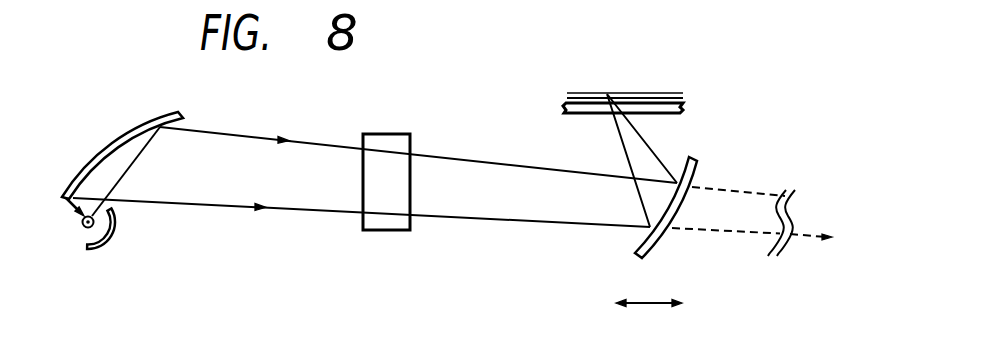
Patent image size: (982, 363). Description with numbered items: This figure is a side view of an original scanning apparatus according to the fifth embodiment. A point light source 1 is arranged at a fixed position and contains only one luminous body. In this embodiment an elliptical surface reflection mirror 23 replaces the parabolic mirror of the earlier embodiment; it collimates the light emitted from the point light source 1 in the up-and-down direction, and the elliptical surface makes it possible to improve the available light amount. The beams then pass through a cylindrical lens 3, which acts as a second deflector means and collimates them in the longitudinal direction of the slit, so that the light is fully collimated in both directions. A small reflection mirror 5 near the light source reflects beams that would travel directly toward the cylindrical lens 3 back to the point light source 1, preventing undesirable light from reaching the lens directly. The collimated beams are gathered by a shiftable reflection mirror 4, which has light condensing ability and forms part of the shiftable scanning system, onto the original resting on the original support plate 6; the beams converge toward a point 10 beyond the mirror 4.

The point light source 1 is at (83, 229).
The cylindrical lens 3 is at (388, 137).
The shiftable reflection mirror 4 is at (655, 238).
The small reflection mirror 5 is at (117, 228).
The original support plate 6 is at (684, 108).
The focal point 10 is at (830, 240).
The elliptical surface reflection mirror 23 is at (150, 120).